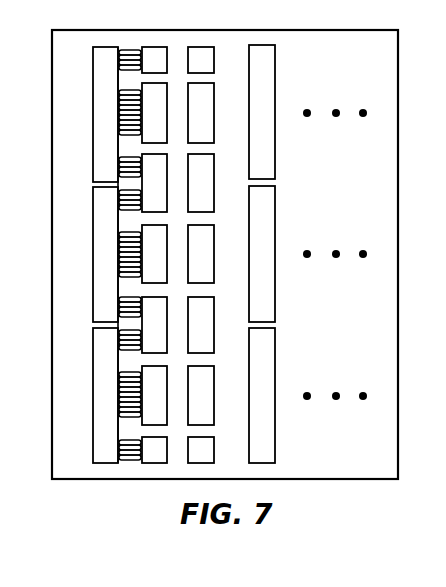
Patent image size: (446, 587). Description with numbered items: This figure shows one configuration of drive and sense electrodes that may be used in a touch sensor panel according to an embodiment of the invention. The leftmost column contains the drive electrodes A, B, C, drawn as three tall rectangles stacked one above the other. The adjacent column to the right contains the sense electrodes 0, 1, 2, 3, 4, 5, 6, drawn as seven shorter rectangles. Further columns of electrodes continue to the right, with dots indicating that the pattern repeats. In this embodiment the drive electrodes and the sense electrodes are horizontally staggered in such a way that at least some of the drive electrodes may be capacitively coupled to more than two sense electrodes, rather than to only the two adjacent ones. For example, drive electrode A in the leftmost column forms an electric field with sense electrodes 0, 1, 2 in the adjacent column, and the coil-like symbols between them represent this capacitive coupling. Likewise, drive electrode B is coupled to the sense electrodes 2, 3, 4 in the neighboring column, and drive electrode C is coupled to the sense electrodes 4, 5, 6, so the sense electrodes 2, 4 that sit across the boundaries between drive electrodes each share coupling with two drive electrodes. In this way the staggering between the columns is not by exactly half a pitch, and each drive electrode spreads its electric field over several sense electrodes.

The drive electrode A is at (105, 114).
The drive electrode B is at (105, 254).
The drive electrode C is at (105, 395).
The sense electrode 0 is at (154, 60).
The sense electrode 1 is at (154, 113).
The sense electrode 2 is at (154, 183).
The sense electrode 3 is at (154, 254).
The sense electrode 4 is at (154, 325).
The sense electrode 5 is at (154, 395).
The sense electrode 6 is at (154, 450).